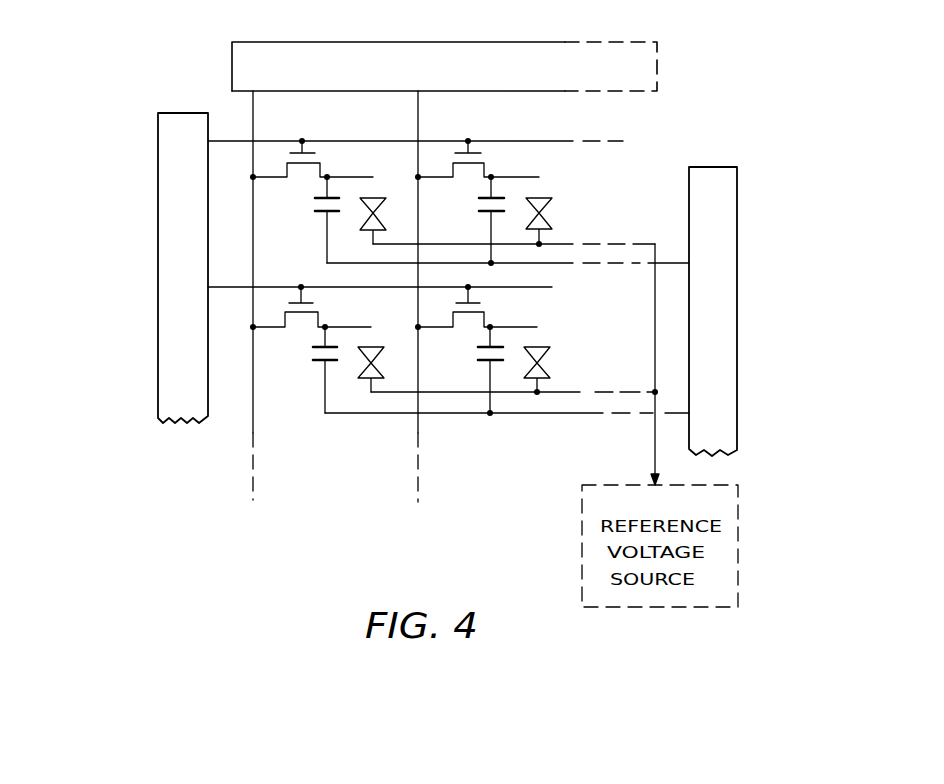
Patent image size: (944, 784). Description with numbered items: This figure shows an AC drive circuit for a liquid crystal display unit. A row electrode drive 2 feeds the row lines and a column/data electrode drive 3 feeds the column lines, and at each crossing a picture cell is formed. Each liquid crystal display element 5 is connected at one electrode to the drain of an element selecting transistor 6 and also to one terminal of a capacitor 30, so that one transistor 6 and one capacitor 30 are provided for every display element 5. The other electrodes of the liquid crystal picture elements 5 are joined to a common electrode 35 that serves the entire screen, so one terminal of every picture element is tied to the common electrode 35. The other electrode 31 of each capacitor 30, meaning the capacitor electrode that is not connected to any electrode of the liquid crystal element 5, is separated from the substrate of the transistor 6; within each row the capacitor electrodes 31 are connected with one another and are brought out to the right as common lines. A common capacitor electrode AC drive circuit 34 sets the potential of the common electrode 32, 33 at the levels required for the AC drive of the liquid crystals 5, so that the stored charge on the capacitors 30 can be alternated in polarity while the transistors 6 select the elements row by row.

The row electrode drive 2 is at (174, 122).
The column/data electrode drive 3 is at (511, 46).
The liquid crystal display element 5 is at (380, 214).
The element selecting transistor 6 is at (310, 164).
The capacitor 30 is at (316, 207).
The capacitor electrode 31 is at (323, 254).
The common electrode 32 is at (673, 263).
The common electrode 33 is at (666, 412).
The common capacitor electrode AC drive circuit 34 is at (723, 176).
The common electrode 35 is at (653, 454).